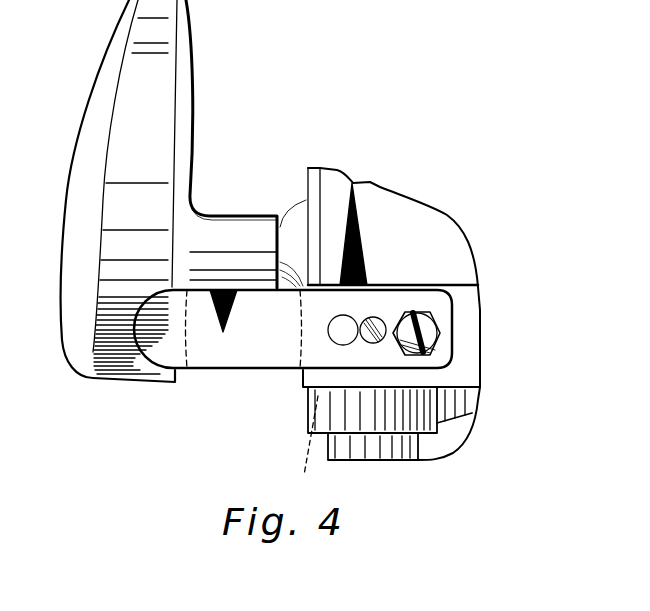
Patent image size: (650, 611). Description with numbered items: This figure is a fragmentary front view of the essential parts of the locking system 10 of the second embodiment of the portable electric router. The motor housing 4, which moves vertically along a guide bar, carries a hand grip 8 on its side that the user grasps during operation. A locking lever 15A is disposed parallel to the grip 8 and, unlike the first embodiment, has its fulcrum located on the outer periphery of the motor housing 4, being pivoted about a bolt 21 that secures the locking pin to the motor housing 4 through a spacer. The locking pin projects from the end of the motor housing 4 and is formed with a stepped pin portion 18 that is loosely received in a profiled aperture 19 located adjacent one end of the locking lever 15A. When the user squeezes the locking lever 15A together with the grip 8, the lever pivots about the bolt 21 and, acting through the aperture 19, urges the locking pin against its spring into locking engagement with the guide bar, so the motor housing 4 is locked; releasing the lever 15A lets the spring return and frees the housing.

The hand grip 8 is at (182, 82).
The motor housing 4 is at (457, 403).
The locking system 10 is at (229, 350).
The locking lever 15A is at (252, 352).
The stepped pin portion 18 is at (304, 448).
The profiled aperture 19 is at (353, 318).
The bolt 21 is at (423, 322).